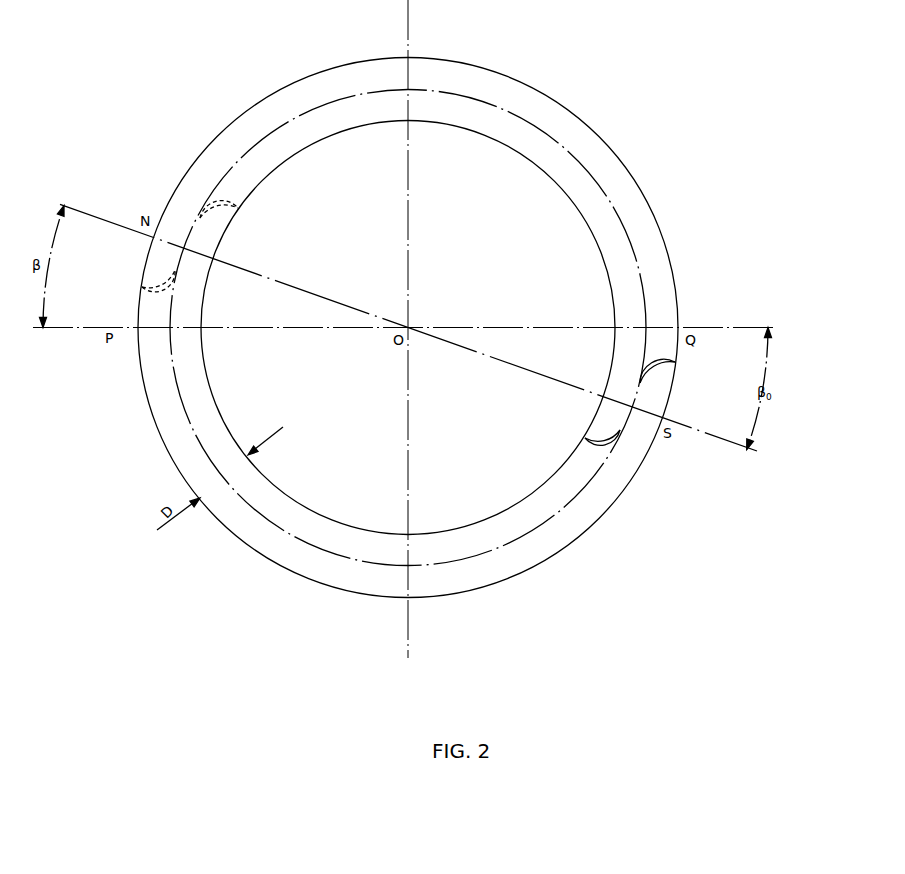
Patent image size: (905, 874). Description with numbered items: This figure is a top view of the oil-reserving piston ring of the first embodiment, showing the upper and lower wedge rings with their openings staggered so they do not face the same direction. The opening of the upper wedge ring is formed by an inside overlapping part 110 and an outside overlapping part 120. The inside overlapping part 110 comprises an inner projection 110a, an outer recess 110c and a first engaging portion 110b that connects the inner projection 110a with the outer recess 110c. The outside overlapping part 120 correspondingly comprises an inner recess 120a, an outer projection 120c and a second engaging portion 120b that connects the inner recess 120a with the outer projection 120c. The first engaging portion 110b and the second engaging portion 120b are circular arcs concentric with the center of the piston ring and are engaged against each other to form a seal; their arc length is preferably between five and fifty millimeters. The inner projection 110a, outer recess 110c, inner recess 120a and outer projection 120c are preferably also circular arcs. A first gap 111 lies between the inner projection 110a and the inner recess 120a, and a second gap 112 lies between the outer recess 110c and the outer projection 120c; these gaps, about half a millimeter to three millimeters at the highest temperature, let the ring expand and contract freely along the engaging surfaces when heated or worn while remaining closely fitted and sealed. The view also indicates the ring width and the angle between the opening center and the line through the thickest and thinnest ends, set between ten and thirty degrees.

The inside overlapping part 110 is at (625, 400).
The inner projection 110a is at (595, 432).
The first engaging portion 110b is at (636, 393).
The outer recess 110c is at (645, 347).
The first gap 111 is at (590, 446).
The second gap 112 is at (673, 363).
The outside overlapping part 120 is at (643, 420).
The inner recess 120a is at (607, 450).
The second engaging portion 120b is at (628, 440).
The outer projection 120c is at (658, 380).